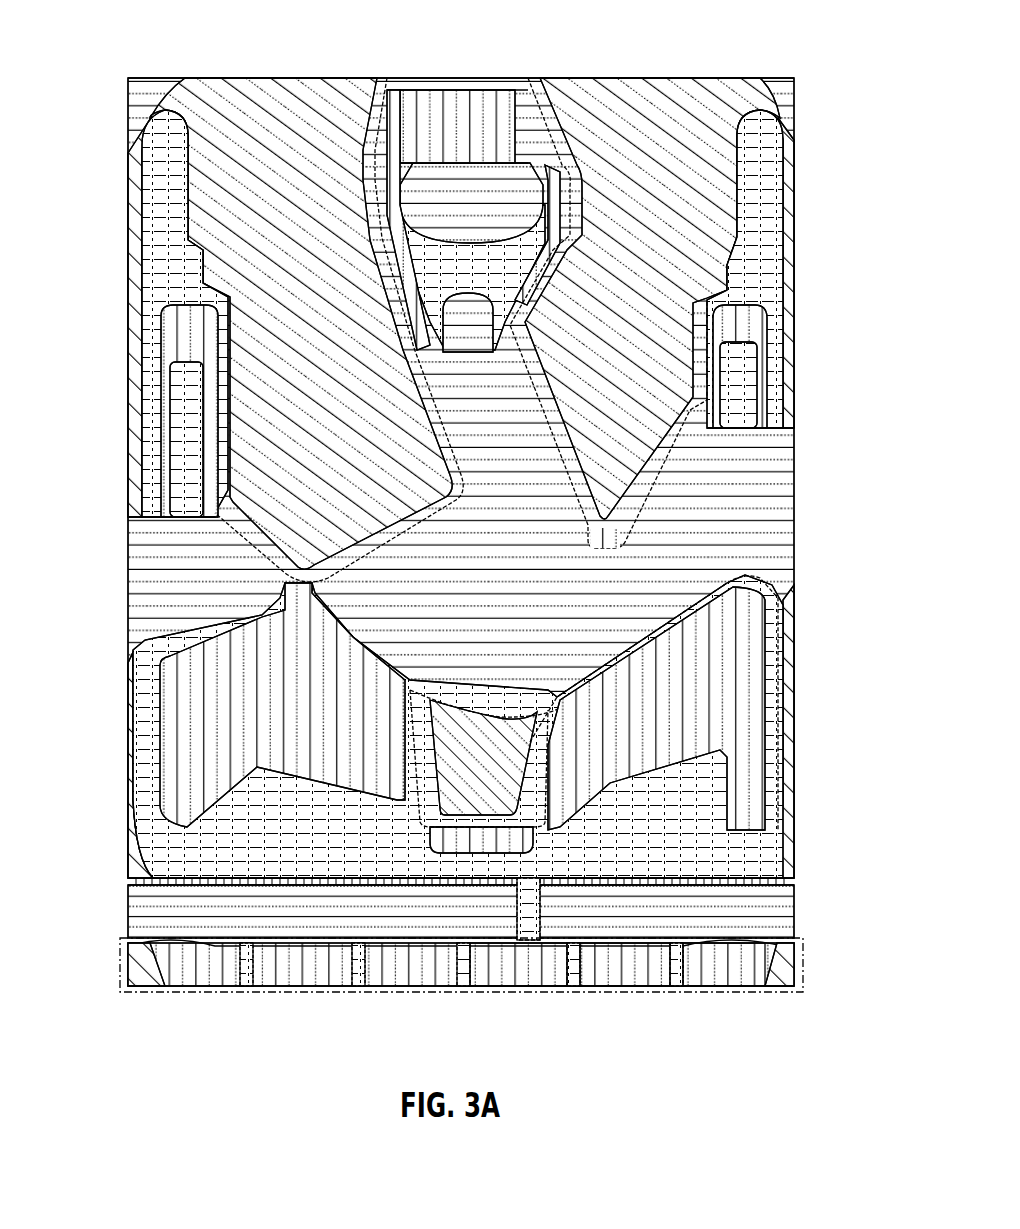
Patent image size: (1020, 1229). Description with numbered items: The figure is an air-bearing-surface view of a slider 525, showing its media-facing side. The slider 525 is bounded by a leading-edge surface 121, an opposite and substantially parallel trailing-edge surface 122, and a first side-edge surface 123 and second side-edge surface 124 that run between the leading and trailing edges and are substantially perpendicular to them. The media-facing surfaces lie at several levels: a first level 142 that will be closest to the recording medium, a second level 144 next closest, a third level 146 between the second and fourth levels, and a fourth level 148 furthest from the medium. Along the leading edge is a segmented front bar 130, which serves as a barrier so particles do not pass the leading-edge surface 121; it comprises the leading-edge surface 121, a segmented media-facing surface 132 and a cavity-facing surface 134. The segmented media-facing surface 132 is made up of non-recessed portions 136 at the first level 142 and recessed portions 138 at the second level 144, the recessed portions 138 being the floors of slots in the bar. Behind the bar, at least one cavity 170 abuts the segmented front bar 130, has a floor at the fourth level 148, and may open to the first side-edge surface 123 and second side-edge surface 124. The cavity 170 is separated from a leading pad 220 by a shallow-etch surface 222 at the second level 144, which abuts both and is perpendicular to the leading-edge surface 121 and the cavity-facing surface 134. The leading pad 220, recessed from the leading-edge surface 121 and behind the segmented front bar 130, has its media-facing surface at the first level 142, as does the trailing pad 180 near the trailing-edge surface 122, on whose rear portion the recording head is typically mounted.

The slider 525 is at (150, 61).
The third level 146 is at (222, 98).
The trailing-edge surface 122 is at (283, 76).
The trailing pad 180 is at (400, 98).
The fourth level 148 is at (508, 175).
The second level 144 is at (760, 205).
The second side-edge surface 124 is at (797, 325).
The first side-edge surface 123 is at (124, 346).
The leading pad 220 is at (775, 690).
The first level 142 is at (185, 740).
The shallow-etch surface 222 is at (767, 853).
The cavity 170 is at (138, 911).
The segmented front bar 130 is at (418, 1001).
The segmented media-facing surface 132 is at (164, 972).
The leading-edge surface 121 is at (213, 992).
The recessed portions 138 is at (246, 977).
The cavity-facing surface 134 is at (298, 945).
The non-recessed portions 136 is at (515, 975).